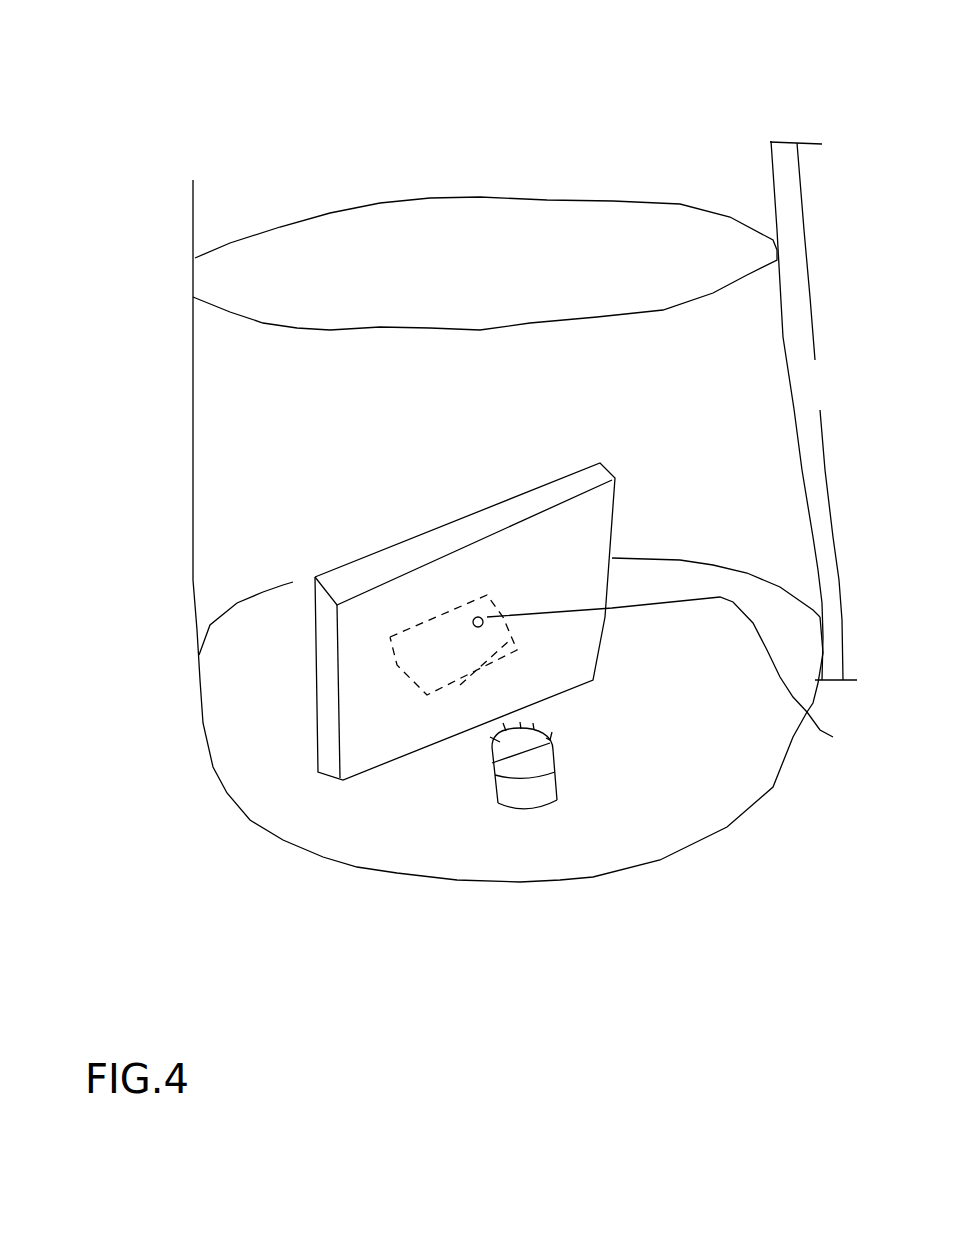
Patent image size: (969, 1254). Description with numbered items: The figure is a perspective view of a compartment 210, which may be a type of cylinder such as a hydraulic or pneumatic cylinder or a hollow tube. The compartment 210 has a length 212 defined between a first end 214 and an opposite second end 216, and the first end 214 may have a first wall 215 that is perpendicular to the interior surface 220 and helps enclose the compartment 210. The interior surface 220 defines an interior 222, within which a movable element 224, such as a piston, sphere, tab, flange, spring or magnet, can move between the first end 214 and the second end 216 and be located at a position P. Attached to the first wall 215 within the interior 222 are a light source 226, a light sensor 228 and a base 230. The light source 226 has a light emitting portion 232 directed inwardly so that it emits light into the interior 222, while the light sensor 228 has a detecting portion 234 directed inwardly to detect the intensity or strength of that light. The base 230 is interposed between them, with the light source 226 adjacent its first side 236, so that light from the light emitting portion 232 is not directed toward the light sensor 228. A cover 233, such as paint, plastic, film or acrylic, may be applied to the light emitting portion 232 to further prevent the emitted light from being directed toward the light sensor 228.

The compartment 210 is at (831, 85).
The length 212 is at (813, 410).
The first end 214 is at (195, 735).
The first wall 215 is at (377, 856).
The second end 216 is at (181, 188).
The interior surface 220 is at (475, 853).
The interior 222 is at (230, 465).
The movable element 224 is at (218, 270).
The light source 226 is at (575, 788).
The light sensor 228 is at (388, 669).
The base 230 is at (628, 530).
The light emitting portion 232 is at (523, 760).
The cover 233 is at (483, 760).
The detecting portion 234 is at (691, 678).
The first side 236 is at (363, 747).
The position P is at (774, 279).